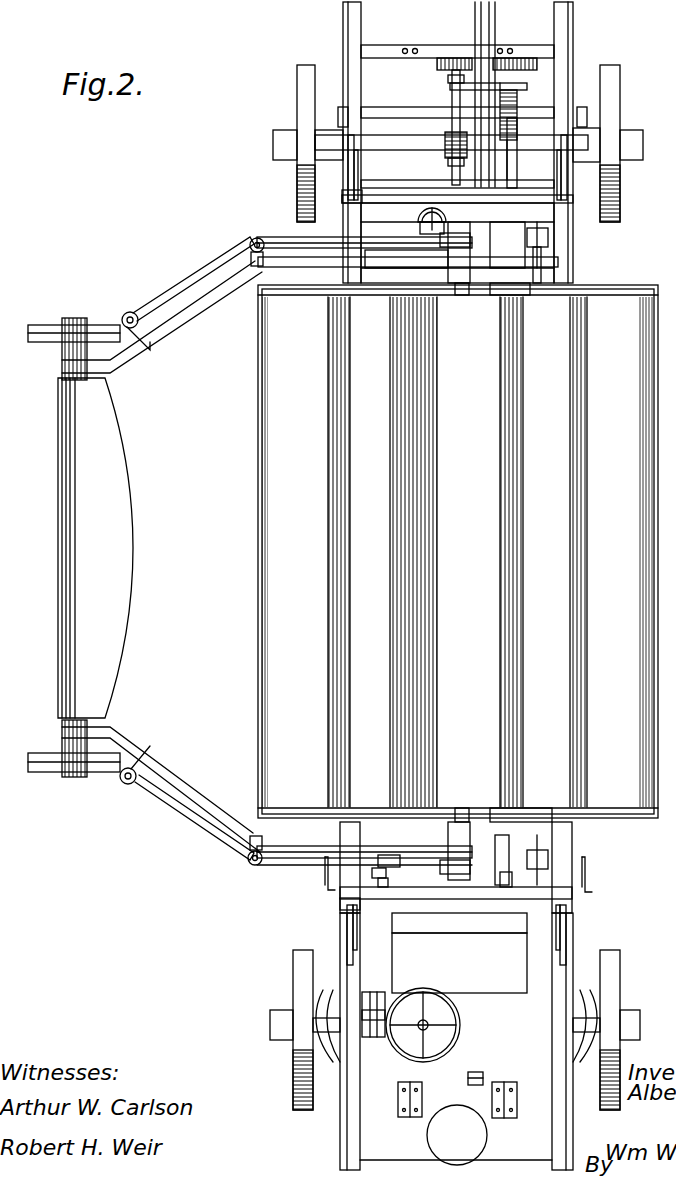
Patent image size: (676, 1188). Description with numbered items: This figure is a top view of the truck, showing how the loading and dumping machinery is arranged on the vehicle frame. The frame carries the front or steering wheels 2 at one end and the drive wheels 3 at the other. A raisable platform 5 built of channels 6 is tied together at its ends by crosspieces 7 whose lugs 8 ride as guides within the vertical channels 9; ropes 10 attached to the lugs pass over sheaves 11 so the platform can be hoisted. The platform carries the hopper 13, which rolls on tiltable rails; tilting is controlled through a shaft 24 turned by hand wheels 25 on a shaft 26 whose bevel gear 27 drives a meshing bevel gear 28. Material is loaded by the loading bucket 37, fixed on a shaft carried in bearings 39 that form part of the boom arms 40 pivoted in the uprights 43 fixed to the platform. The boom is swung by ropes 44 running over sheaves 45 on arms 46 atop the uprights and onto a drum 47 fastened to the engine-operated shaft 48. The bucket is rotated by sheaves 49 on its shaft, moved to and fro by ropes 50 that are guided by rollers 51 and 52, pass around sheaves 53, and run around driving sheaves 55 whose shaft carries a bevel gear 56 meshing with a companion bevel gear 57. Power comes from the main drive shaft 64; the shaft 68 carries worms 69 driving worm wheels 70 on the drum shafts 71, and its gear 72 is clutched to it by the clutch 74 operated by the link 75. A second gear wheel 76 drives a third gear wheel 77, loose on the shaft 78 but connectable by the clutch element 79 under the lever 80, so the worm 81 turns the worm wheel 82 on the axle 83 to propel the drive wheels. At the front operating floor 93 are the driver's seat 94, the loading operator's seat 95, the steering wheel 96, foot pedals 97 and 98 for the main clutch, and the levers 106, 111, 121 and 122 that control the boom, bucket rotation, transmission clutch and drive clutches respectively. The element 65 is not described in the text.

The front or steering wheels 2 is at (303, 1105).
The drive wheels 3 is at (300, 96).
The platform 5 is at (573, 258).
The channels 6 is at (343, 221).
The crosspieces 7 is at (492, 170).
The lugs 8 is at (566, 199).
The vertical channels 9 is at (342, 198).
The ropes 10 is at (561, 145).
The sheaves 11 is at (358, 175).
The hopper 13 is at (262, 540).
The shaft 24 is at (392, 855).
The hand wheels 25 is at (325, 876).
The shaft 26 is at (508, 880).
The bevel gear 27 is at (385, 887).
The bevel gear 28 is at (380, 868).
The loading bucket 37 is at (122, 530).
The bearings 39 is at (62, 368).
The arms 40 is at (215, 298).
The uprights 43 is at (502, 292).
The ropes 44 is at (292, 238).
The sheaves 45 is at (448, 262).
The arms 46 is at (462, 296).
The drum 47 is at (548, 240).
The shaft 48 is at (535, 268).
The sheaves 49 is at (100, 326).
The ropes 50 is at (192, 286).
The rollers 51 is at (252, 240).
The rollers 52 is at (136, 313).
The sheaves 53 is at (455, 233).
The driving sheaves 55 is at (405, 255).
The bevel gear 56 is at (420, 228).
The companion bevel gear 57 is at (425, 208).
The main drive shaft 64 is at (465, 58).
The rod 65 is at (498, 850).
The shaft 68 is at (510, 204).
The worms 69 is at (505, 130).
The worm wheels 70 is at (517, 100).
The shafts 71 is at (400, 112).
The gear 72 is at (525, 60).
The clutch 74 is at (505, 58).
The link 75 is at (522, 183).
The second gear wheel 76 is at (484, 58).
The third gear wheel 77 is at (445, 60).
The shaft 78 is at (452, 100).
The clutch element 79 is at (448, 80).
The lever 80 is at (500, 90).
The worm 81 is at (448, 160).
The worm wheel 82 is at (445, 128).
The axle 83 is at (385, 142).
The front operating floor 93 is at (538, 1052).
The seat 94 is at (515, 970).
The seat 95 is at (430, 1138).
The steering wheel 96 is at (458, 1018).
The foot pedal 97 is at (417, 1054).
The foot pedal 98 is at (468, 1080).
The lever 106 is at (398, 1105).
The lever 111 is at (520, 1092).
The lever 121 is at (370, 1037).
The lever 122 is at (380, 992).